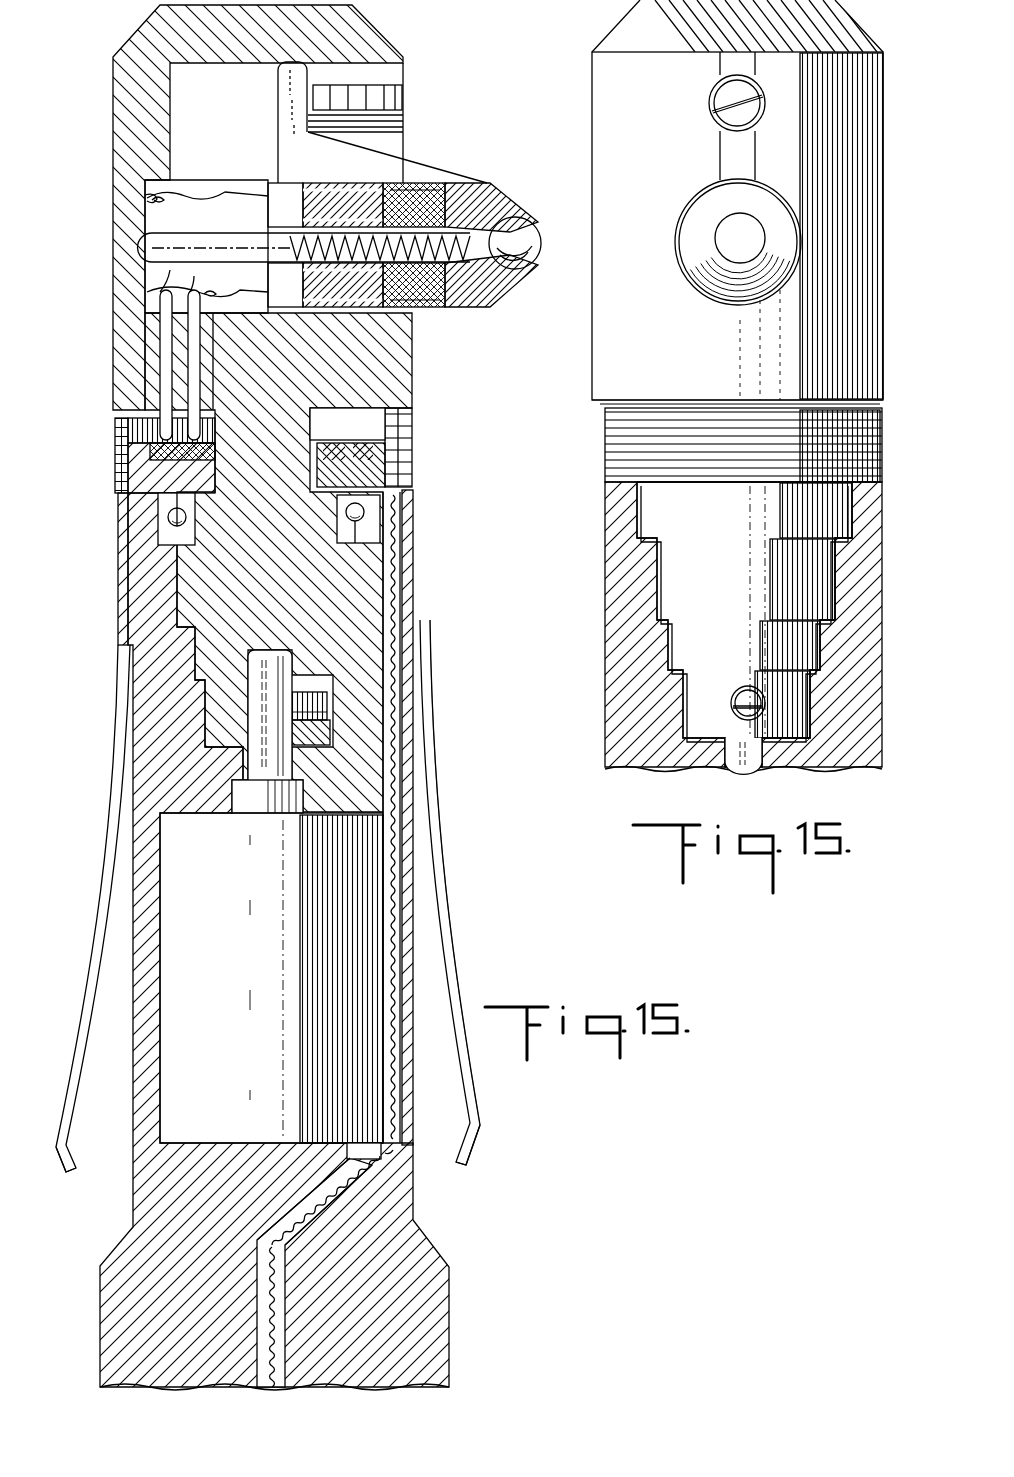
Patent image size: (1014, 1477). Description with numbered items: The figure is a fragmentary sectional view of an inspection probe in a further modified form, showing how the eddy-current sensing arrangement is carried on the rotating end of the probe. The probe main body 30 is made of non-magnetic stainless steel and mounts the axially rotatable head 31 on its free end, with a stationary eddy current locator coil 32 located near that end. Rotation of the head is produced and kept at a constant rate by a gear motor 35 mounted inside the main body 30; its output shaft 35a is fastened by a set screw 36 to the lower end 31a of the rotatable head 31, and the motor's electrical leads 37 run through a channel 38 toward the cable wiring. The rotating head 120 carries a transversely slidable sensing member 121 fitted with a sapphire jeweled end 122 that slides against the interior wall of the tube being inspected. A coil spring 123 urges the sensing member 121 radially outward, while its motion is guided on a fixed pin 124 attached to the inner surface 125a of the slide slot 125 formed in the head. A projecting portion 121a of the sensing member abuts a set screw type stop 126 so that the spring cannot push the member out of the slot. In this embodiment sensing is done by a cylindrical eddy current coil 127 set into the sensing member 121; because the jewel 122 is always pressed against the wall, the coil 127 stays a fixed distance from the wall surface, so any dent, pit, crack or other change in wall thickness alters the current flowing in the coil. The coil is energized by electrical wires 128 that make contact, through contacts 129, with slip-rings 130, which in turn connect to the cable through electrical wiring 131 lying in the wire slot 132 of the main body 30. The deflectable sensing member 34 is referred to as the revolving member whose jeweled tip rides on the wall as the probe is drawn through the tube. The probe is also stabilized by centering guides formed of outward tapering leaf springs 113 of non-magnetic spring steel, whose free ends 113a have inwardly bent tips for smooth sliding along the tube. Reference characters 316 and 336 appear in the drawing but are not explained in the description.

In FIG. 15, the main body 30 is at (128, 1088).
In FIG. 16, the main body 30 is at (878, 512).
In FIG. 15, the rotatable head 31 is at (278, 562).
In FIG. 16, the rotatable head 31 is at (592, 100).
In FIG. 15, the lower end of rotatable head 31a is at (330, 648).
In FIG. 16, the lower end of rotatable head 31a is at (812, 742).
In FIG. 15, the eddy current locator coil 32 is at (125, 432).
In FIG. 16, the eddy current locator coil 32 is at (612, 430).
In FIG. 16, the sensing member 34 is at (702, 278).
In FIG. 15, the gear motor 35 is at (271, 969).
In FIG. 15, the output shaft 35a is at (250, 704).
In FIG. 16, the output shaft 35a is at (748, 762).
In FIG. 15, the set screw 36 is at (330, 700).
In FIG. 16, the set screw 36 is at (728, 715).
In FIG. 15, the electrical leads 37 is at (275, 1210).
In FIG. 15, the channel 38 is at (398, 778).
In FIG. 15, the leaf springs 113 is at (98, 953).
In FIG. 15, the free ends of leaf springs 113a is at (62, 1160).
In FIG. 15, the rotating head 120 is at (378, 30).
In FIG. 15, the slidable sensing member 121 is at (500, 212).
In FIG. 15, the projecting portion 121a is at (284, 86).
In FIG. 15, the sapphire jeweled end 122 is at (520, 270).
In FIG. 16, the sapphire jeweled end 122 is at (735, 222).
In FIG. 15, the coil spring 123 is at (460, 307).
In FIG. 15, the fixed pin 124 is at (152, 247).
In FIG. 15, the slide slot 125 is at (203, 190).
In FIG. 15, the inner surface of slide slot 125a is at (145, 196).
In FIG. 15, the set screw type stop 126 is at (400, 90).
In FIG. 16, the set screw type stop 126 is at (712, 90).
In FIG. 15, the eddy current coil 127 is at (440, 310).
In FIG. 15, the electrical wires 128 is at (210, 290).
In FIG. 15, the contacts 129 is at (190, 372).
In FIG. 15, the slip-rings 130 is at (160, 462).
In FIG. 15, the electrical wiring 131 is at (398, 500).
In FIG. 15, the wire slot 132 is at (398, 520).
In FIG. 16, the top face 316 is at (623, 12).
In FIG. 15, the clip 336 is at (443, 857).